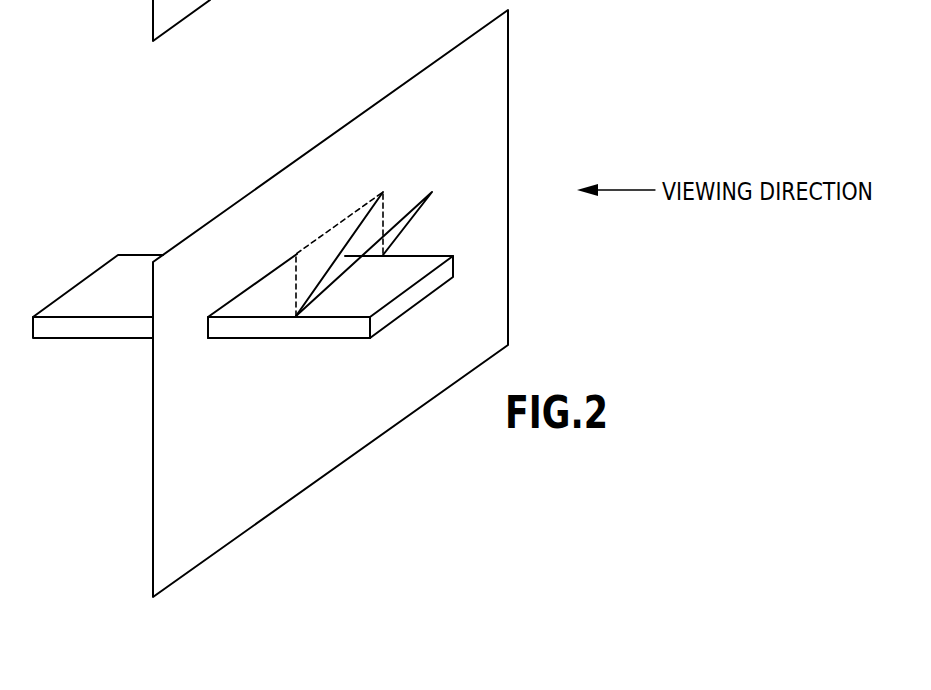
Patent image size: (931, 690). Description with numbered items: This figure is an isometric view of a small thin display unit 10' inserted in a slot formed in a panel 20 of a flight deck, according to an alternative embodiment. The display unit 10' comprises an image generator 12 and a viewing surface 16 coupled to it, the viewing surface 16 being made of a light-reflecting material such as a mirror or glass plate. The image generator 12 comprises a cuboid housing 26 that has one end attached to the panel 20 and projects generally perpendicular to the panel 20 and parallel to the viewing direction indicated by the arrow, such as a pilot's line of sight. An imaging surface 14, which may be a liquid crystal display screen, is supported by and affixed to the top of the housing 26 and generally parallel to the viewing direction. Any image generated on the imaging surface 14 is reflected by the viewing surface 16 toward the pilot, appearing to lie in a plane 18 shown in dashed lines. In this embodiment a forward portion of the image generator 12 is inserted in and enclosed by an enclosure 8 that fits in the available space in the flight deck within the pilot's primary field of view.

The enclosure 8 is at (68, 340).
The small thin display unit 10' is at (393, 284).
The image generator 12 is at (430, 306).
The imaging surface 14 is at (350, 302).
The viewing surface 16 is at (407, 226).
The plane 18 is at (292, 287).
The panel 20 is at (516, 90).
The housing 26 is at (250, 340).